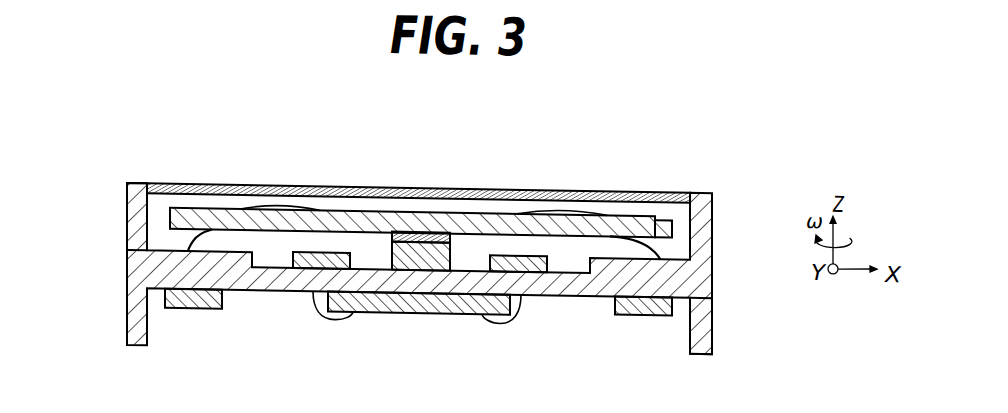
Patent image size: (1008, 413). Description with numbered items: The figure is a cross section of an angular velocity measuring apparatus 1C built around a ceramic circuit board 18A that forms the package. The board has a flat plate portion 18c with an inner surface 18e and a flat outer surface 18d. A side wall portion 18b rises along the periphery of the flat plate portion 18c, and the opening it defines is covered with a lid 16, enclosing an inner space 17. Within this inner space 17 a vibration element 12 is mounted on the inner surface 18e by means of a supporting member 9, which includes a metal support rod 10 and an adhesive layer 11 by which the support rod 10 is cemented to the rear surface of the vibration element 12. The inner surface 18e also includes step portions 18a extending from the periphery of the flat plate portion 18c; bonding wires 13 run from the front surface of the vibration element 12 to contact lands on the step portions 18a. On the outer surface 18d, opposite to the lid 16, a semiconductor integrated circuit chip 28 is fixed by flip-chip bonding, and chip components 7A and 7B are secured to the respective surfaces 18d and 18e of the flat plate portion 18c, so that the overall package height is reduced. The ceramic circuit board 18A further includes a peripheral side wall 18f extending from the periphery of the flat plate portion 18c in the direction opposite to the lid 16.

The angular velocity measuring apparatus 1C is at (722, 206).
The chip component 7A is at (187, 307).
The chip component 7B is at (342, 249).
The supporting member 9 is at (422, 226).
The support rod 10 is at (417, 308).
The adhesive layer 11 is at (392, 232).
The vibration element 12 is at (468, 206).
The bonding wires 13 is at (563, 203).
The lid 16 is at (525, 185).
The inner space 17 is at (488, 258).
The ceramic circuit board 18A is at (682, 260).
The step portions 18a is at (658, 259).
The side wall portion 18b is at (138, 230).
The flat plate portion 18c is at (298, 288).
The outer surface 18d is at (257, 288).
The inner surface 18e is at (275, 266).
The peripheral side wall 18f is at (707, 330).
The semiconductor integrated circuit chip 28 is at (452, 307).